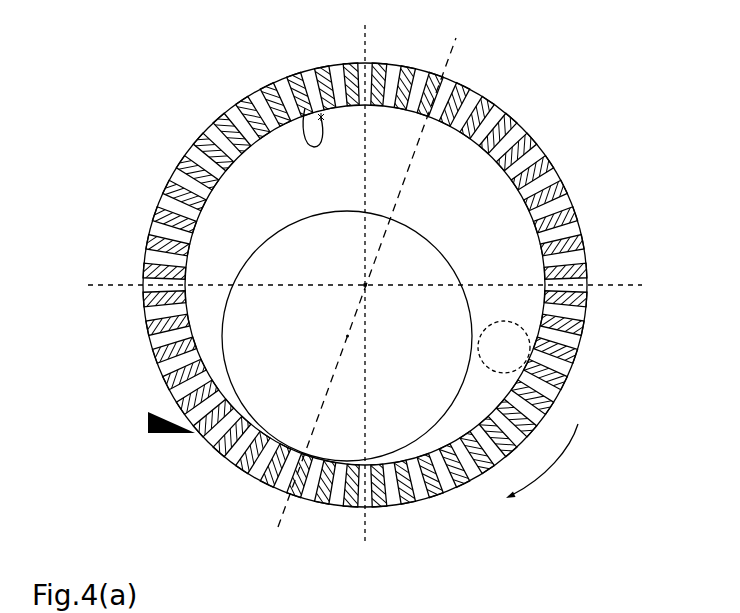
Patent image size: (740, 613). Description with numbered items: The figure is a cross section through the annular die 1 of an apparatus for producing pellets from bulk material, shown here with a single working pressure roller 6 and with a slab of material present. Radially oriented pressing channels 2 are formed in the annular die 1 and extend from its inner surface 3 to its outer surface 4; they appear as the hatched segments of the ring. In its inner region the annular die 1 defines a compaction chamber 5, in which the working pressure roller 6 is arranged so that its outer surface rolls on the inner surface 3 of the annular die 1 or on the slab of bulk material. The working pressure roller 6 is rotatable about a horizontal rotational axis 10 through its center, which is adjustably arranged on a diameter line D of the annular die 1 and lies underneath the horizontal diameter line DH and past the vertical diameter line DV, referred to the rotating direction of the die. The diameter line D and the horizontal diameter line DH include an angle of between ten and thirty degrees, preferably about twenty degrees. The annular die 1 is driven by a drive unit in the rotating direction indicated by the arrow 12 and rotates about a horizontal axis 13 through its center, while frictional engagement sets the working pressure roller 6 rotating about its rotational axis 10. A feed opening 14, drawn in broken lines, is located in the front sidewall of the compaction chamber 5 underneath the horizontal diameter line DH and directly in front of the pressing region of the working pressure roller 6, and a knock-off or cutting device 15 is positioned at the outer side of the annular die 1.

The annular die 1 is at (241, 101).
The pressing channels 2 is at (173, 176).
The inner surface 3 is at (300, 105).
The outer surface 4 is at (516, 118).
The compaction chamber 5 is at (488, 390).
The working pressure roller 6 is at (291, 226).
The rotational axis of working pressure roller 10 is at (347, 336).
The rotating direction of annular die 12 is at (543, 461).
The rotational axis of annular die 13 is at (365, 285).
The feed opening 14 is at (528, 360).
The knock-off or cutting device 15 is at (148, 433).
The vertical diameter line of annular die DV is at (365, 36).
The horizontal diameter line of annular die DH is at (634, 285).
The diameter line of annular die D is at (455, 54).